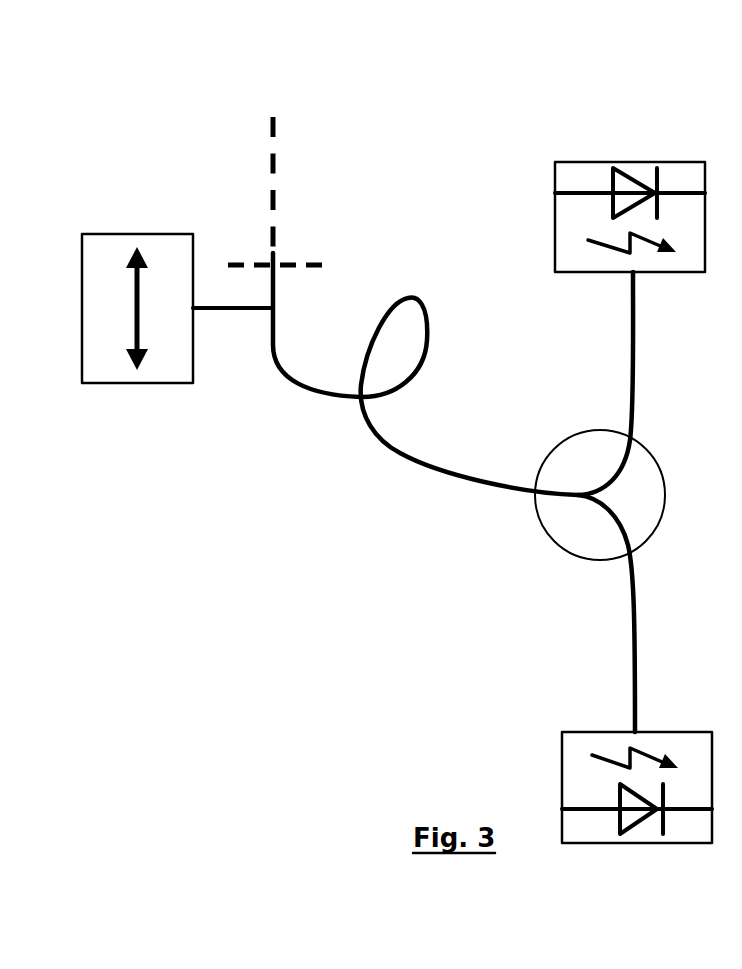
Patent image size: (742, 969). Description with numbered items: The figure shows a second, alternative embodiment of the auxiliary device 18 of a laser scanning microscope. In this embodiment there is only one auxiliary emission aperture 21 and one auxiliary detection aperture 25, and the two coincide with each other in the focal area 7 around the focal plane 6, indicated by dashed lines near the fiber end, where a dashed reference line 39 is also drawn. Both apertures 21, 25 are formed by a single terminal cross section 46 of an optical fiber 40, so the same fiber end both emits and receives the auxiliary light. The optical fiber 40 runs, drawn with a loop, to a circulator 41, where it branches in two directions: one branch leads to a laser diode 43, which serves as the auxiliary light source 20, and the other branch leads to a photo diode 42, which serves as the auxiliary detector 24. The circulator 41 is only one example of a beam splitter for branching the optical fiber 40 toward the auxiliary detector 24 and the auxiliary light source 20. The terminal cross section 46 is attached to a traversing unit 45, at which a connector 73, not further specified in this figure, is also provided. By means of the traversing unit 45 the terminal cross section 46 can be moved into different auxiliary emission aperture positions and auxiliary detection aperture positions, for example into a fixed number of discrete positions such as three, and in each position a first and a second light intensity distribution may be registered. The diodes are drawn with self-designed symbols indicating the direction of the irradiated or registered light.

The auxiliary device 18 is at (140, 139).
The reference plane 39 is at (270, 122).
The focal area 7 is at (294, 170).
The focal plane 6 is at (313, 263).
The auxiliary emission aperture 21 is at (425, 362).
The auxiliary detection aperture 25 is at (425, 362).
The terminal cross section 46 is at (425, 362).
The optical fiber 40 is at (403, 450).
The circulator 41 is at (660, 445).
The auxiliary light source 20 is at (630, 174).
The laser diode 43 is at (625, 160).
The auxiliary detector 24 is at (597, 746).
The photo diode 42 is at (572, 728).
The traversing unit 45 is at (129, 379).
The connector 73 is at (146, 393).